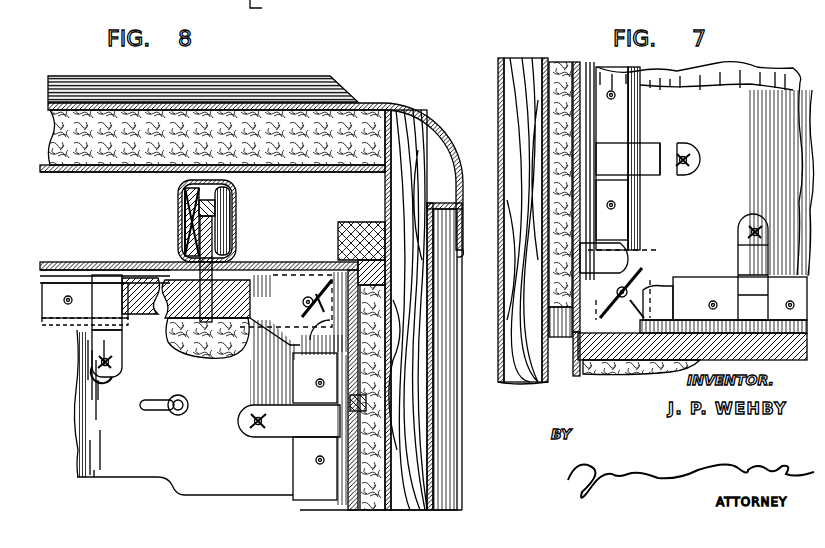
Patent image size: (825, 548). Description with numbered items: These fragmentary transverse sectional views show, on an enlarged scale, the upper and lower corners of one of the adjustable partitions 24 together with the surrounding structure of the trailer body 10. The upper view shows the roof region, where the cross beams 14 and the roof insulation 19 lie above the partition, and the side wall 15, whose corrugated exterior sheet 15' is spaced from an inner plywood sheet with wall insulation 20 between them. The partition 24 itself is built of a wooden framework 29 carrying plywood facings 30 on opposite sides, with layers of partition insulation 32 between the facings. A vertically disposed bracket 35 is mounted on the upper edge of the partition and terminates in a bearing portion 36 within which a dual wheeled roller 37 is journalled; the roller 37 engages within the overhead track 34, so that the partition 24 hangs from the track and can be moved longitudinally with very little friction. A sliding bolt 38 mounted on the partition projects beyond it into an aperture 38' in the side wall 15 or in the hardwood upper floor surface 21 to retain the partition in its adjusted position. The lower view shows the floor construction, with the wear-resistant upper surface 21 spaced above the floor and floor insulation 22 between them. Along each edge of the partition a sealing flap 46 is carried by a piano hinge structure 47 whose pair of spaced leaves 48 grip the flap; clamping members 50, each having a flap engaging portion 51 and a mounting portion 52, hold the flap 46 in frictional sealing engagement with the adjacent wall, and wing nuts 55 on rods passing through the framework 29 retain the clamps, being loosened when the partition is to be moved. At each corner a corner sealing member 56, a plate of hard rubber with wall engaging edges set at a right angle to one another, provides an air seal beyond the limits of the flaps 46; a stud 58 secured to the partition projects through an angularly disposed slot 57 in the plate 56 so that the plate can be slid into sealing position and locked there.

In FIG. 8, the trailer body 10 is at (436, 132).
In FIG. 8, the cross beams 14 is at (265, 7).
In FIG. 8, the side walls 15 is at (436, 310).
In FIG. 7, the side walls 15 is at (508, 221).
In FIG. 8, the corrugated exterior sheet of side wall 15' is at (458, 356).
In FIG. 8, the roof insulation 19 is at (348, 129).
In FIG. 8, the wall insulation 20 is at (380, 368).
In FIG. 7, the wall insulation 20 is at (556, 270).
In FIG. 7, the upper floor surface 21 is at (600, 344).
In FIG. 7, the floor insulation 22 is at (640, 364).
In FIG. 8, the partition 24 is at (98, 460).
In FIG. 7, the partition 24 is at (798, 108).
In FIG. 8, the wooden framework 29 is at (166, 298).
In FIG. 8, the facings 30 is at (166, 484).
In FIG. 7, the facings 30 is at (768, 74).
In FIG. 8, the partition insulation 32 is at (180, 352).
In FIG. 8, the tracks 34 is at (228, 212).
In FIG. 8, the brackets 35 is at (200, 268).
In FIG. 8, the bearing portion 36 is at (184, 214).
In FIG. 8, the dual wheeled rollers 37 is at (230, 190).
In FIG. 8, the sliding bolts 38 is at (164, 417).
In FIG. 8, the apertures 38' is at (383, 407).
In FIG. 8, the flap 46 is at (136, 280).
In FIG. 7, the flap 46 is at (630, 254).
In FIG. 8, the piano hinge structure 47 is at (66, 320).
In FIG. 7, the piano hinge structure 47 is at (642, 192).
In FIG. 8, the hinge leaves 48 is at (60, 286).
In FIG. 7, the hinge leaves 48 is at (630, 224).
In FIG. 8, the clamping members 50 is at (92, 350).
In FIG. 7, the clamping members 50 is at (648, 148).
In FIG. 8, the flap engaging portion 51 is at (104, 280).
In FIG. 7, the flap engaging portion 51 is at (612, 148).
In FIG. 8, the mounting portion 52 is at (90, 368).
In FIG. 7, the mounting portion 52 is at (698, 159).
In FIG. 8, the wing nuts 55 is at (114, 374).
In FIG. 7, the wing nuts 55 is at (688, 148).
In FIG. 8, the corner sealing member 56 is at (312, 272).
In FIG. 7, the corner sealing member 56 is at (588, 338).
In FIG. 8, the angularly disposed slot 57 is at (302, 303).
In FIG. 7, the angularly disposed slot 57 is at (604, 316).
In FIG. 8, the rod or stud 58 is at (306, 313).
In FIG. 7, the rod or stud 58 is at (652, 281).